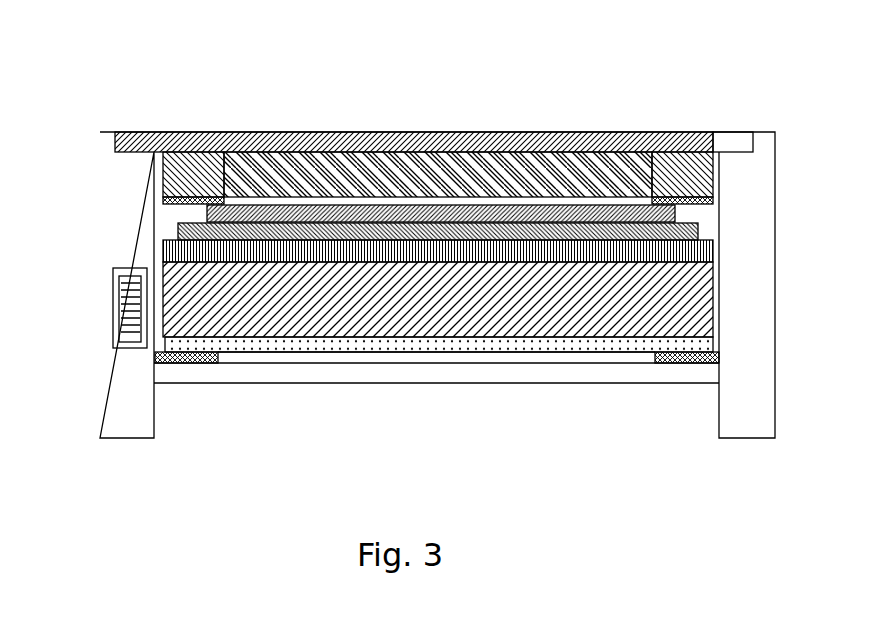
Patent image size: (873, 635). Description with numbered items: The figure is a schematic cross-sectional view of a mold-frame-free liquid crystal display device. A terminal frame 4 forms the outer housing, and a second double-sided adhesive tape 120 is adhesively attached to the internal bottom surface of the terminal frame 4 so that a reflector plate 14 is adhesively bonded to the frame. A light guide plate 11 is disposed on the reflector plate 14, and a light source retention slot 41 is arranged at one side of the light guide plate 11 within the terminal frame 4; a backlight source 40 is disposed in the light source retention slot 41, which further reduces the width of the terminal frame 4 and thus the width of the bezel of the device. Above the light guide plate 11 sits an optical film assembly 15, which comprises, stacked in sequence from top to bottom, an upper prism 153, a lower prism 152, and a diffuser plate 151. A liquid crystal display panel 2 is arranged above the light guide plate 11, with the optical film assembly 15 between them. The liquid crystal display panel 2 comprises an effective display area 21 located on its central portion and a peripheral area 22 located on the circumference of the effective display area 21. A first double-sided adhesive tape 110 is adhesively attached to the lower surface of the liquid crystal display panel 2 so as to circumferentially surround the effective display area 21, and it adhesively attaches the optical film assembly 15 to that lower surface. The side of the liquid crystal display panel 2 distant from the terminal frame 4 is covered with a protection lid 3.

The liquid crystal display panel 2 is at (495, 110).
The protection lid 3 is at (143, 137).
The terminal frame 4 is at (757, 365).
The light guide plate 11 is at (443, 307).
The reflector plate 14 is at (333, 343).
The optical film assembly 15 is at (359, 242).
The effective display area 21 is at (652, 110).
The peripheral area 22 is at (713, 137).
The backlight source 40 is at (92, 308).
The light source retention slot 41 is at (113, 308).
The first double-sided adhesive tape 110 is at (705, 203).
The second double-sided adhesive tape 120 is at (190, 363).
The diffuser plate 151 is at (165, 250).
The lower prism 152 is at (177, 232).
The upper prism 153 is at (207, 208).